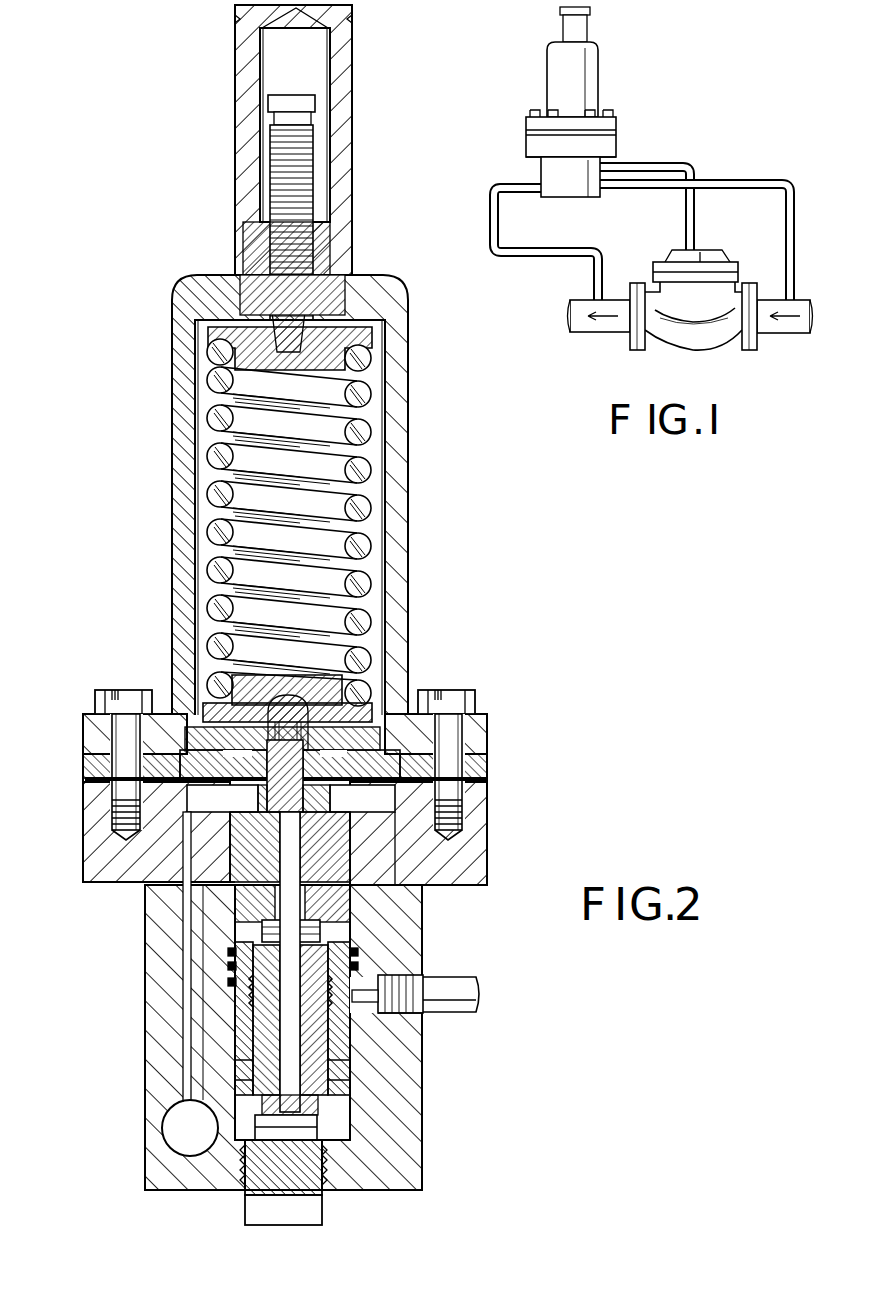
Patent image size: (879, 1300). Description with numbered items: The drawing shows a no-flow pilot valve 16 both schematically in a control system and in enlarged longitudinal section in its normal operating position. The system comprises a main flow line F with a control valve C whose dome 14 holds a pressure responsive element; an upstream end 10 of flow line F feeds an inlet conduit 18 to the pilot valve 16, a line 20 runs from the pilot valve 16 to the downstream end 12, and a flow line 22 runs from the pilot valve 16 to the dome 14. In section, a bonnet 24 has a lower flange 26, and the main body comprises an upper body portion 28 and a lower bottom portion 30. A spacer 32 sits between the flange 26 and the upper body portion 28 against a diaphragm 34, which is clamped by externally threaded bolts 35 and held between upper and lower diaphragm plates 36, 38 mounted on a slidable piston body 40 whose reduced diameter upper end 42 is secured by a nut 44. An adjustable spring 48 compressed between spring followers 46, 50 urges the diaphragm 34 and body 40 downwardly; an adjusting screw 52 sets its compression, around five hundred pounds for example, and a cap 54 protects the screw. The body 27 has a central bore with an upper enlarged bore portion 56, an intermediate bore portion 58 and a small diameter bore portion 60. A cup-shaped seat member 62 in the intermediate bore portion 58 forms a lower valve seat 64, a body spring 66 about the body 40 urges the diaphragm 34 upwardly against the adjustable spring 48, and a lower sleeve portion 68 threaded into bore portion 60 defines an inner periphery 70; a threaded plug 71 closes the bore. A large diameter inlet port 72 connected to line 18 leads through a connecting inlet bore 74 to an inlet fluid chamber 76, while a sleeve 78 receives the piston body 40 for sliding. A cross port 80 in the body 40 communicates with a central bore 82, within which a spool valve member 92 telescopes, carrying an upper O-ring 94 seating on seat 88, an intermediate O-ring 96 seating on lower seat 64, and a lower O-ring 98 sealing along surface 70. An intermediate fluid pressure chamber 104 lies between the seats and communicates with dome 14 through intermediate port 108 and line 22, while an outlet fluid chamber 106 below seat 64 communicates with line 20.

In FIG. 1, the upstream end 10 is at (763, 328).
In FIG. 1, the downstream end 12 is at (620, 325).
In FIG. 1, the dome 14 is at (700, 258).
In FIG. 2, the pilot valve 16 is at (420, 472).
In FIG. 1, the pilot valve 16 is at (604, 92).
In FIG. 1, the inlet conduit 18 is at (716, 184).
In FIG. 1, the line 20 is at (496, 215).
In FIG. 2, the flow line 22 is at (460, 988).
In FIG. 1, the flow line 22 is at (645, 170).
In FIG. 2, the bonnet 24 is at (392, 525).
In FIG. 1, the bonnet 24 is at (553, 80).
In FIG. 2, the lower flange 26 is at (100, 722).
In FIG. 2, the body 27 is at (74, 874).
In FIG. 1, the body 27 is at (527, 166).
In FIG. 2, the upper body portion 28 is at (125, 852).
In FIG. 1, the upper body portion 28 is at (540, 143).
In FIG. 2, the lower bottom portion 30 is at (155, 963).
In FIG. 1, the lower bottom portion 30 is at (562, 197).
In FIG. 2, the spacer 32 is at (95, 765).
In FIG. 2, the diaphragm 34 is at (95, 777).
In FIG. 2, the externally threaded bolts 35 is at (455, 703).
In FIG. 2, the upper diaphragm plate 36 is at (320, 692).
In FIG. 2, the lower diaphragm plate 38 is at (227, 798).
In FIG. 2, the slidable piston body 40 is at (418, 843).
In FIG. 2, the reduced diameter upper end 42 is at (349, 798).
In FIG. 2, the nut 44 is at (215, 700).
In FIG. 2, the spring follower 46 is at (360, 667).
In FIG. 2, the adjustable spring 48 is at (215, 459).
In FIG. 2, the spring follower 50 is at (240, 345).
In FIG. 2, the adjusting screw 52 is at (300, 160).
In FIG. 2, the cap 54 is at (248, 143).
In FIG. 2, the upper enlarged bore portion 56 is at (130, 802).
In FIG. 2, the intermediate bore portion 58 is at (255, 875).
In FIG. 2, the small diameter bore portion 60 is at (340, 1090).
In FIG. 2, the cup-shaped seat member 62 is at (345, 1060).
In FIG. 2, the lower valve seat 64 is at (215, 1050).
In FIG. 2, the body spring 66 is at (395, 1022).
In FIG. 2, the lower sleeve portion 68 is at (325, 1120).
In FIG. 2, the inner periphery 70 is at (245, 1160).
In FIG. 2, the threaded plug 71 is at (290, 1182).
In FIG. 2, the large diameter inlet port 72 is at (188, 1126).
In FIG. 2, the connecting inlet bore 74 is at (190, 1040).
In FIG. 2, the inlet fluid chamber 76 is at (168, 855).
In FIG. 2, the sleeve 78 is at (345, 870).
In FIG. 2, the cross port 80 is at (400, 812).
In FIG. 2, the central bore 82 is at (290, 903).
In FIG. 2, the seat 88 is at (215, 985).
In FIG. 2, the spool valve member 92 is at (320, 1130).
In FIG. 2, the upper O-ring 94 is at (345, 950).
In FIG. 2, the intermediate O-ring 96 is at (345, 1045).
In FIG. 2, the lower O-ring 98 is at (245, 1115).
In FIG. 2, the intermediate fluid pressure chamber 104 is at (208, 1010).
In FIG. 2, the outlet fluid chamber 106 is at (225, 1080).
In FIG. 2, the intermediate port 108 is at (398, 1003).
In FIG. 1, the control valve C is at (690, 325).
In FIG. 1, the main flow line F is at (790, 310).